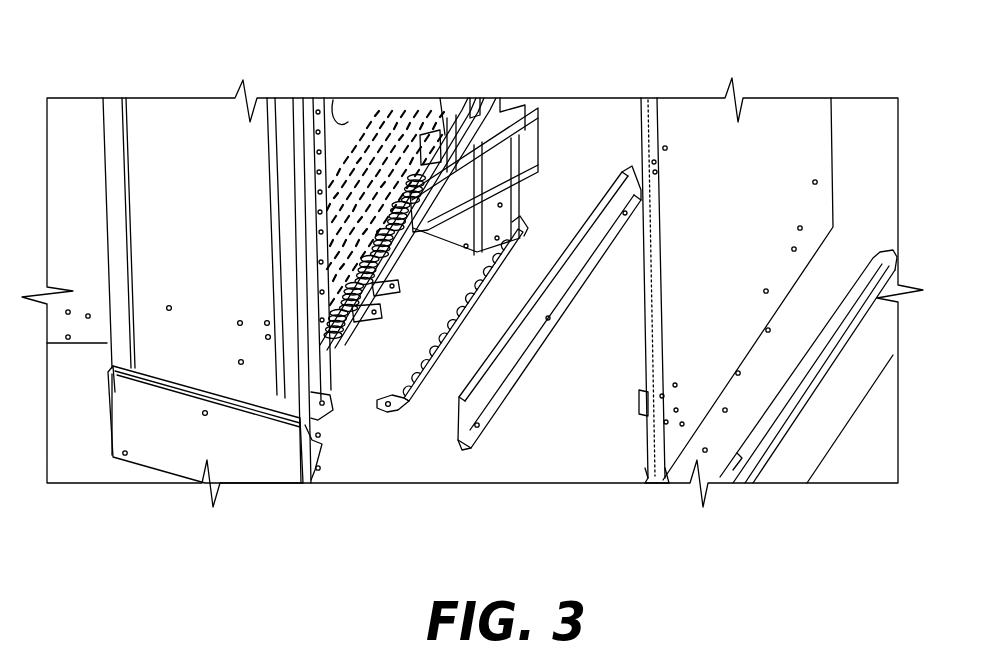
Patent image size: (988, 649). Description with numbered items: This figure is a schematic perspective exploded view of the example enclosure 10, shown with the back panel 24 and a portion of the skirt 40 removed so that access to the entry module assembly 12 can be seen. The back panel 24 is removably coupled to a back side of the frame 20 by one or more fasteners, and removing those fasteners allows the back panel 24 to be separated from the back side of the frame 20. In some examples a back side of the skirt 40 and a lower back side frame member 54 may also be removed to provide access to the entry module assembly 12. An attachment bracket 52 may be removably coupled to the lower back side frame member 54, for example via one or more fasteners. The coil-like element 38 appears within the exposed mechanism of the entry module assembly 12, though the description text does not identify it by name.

The enclosure 10 is at (173, 95).
The entry module assembly 12 is at (362, 406).
The frame 20 is at (305, 425).
The back panel 24 is at (756, 181).
The coil spring 38 is at (345, 334).
The skirt 40 is at (260, 465).
The attachment bracket 52 is at (398, 284).
The lower back side frame member 54 is at (500, 405).